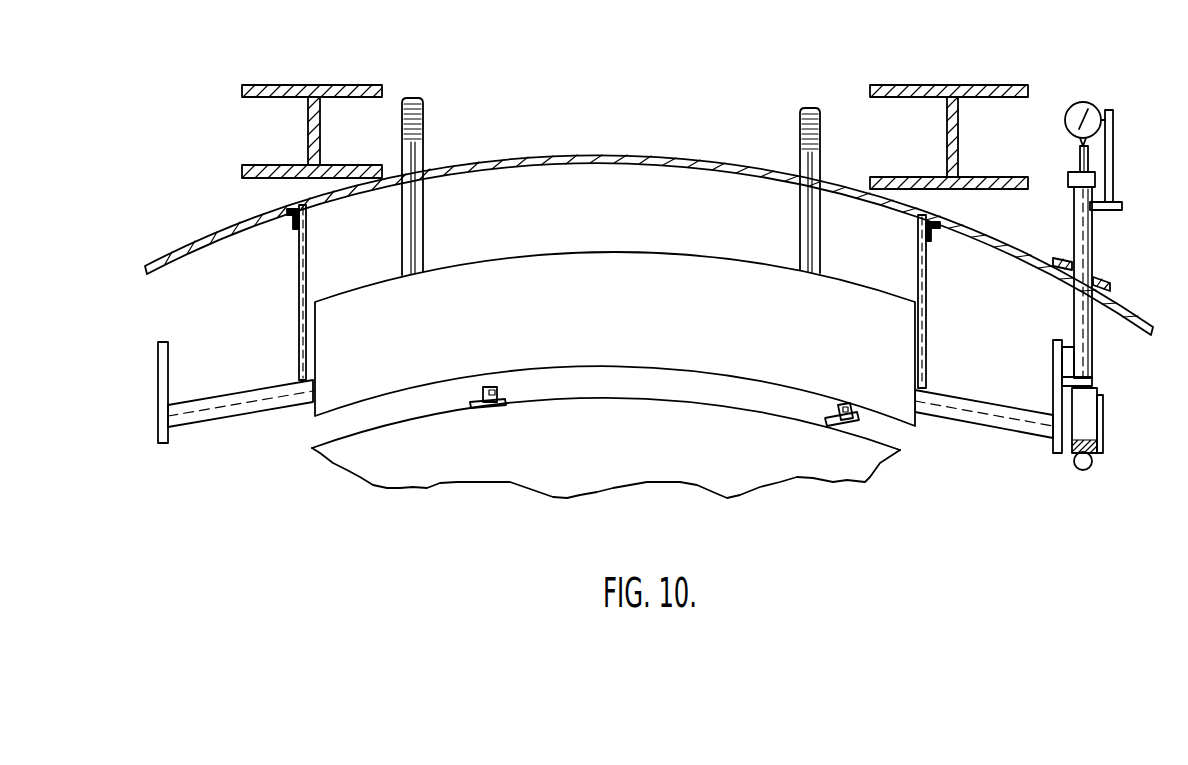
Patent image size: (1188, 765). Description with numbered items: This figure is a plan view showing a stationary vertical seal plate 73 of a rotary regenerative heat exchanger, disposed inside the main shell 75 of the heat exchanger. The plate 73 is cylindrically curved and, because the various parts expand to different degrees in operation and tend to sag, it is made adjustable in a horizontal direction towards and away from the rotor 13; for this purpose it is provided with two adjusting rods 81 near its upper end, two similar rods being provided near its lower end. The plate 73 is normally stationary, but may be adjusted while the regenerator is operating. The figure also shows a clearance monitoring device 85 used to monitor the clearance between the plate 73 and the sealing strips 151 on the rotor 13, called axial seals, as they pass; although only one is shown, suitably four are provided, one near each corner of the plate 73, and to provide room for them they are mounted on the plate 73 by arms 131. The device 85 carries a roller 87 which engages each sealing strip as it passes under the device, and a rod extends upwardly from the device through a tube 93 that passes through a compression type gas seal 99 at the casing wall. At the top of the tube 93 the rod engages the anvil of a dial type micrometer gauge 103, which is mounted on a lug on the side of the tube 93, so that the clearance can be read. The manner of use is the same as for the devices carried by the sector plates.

The rotor 13 is at (585, 480).
The vertical seal plate 73 is at (643, 362).
The main shell 75 is at (607, 159).
The adjusting rods 81 is at (424, 124).
The clearance monitoring device 85 is at (1083, 415).
The roller 87 is at (1092, 462).
The tube 93 is at (1092, 243).
The compression type gas seal 99 is at (1107, 287).
The dial type micrometer gauge 103 is at (1084, 100).
The arms 131 is at (200, 412).
The sealing strips 151 is at (488, 386).